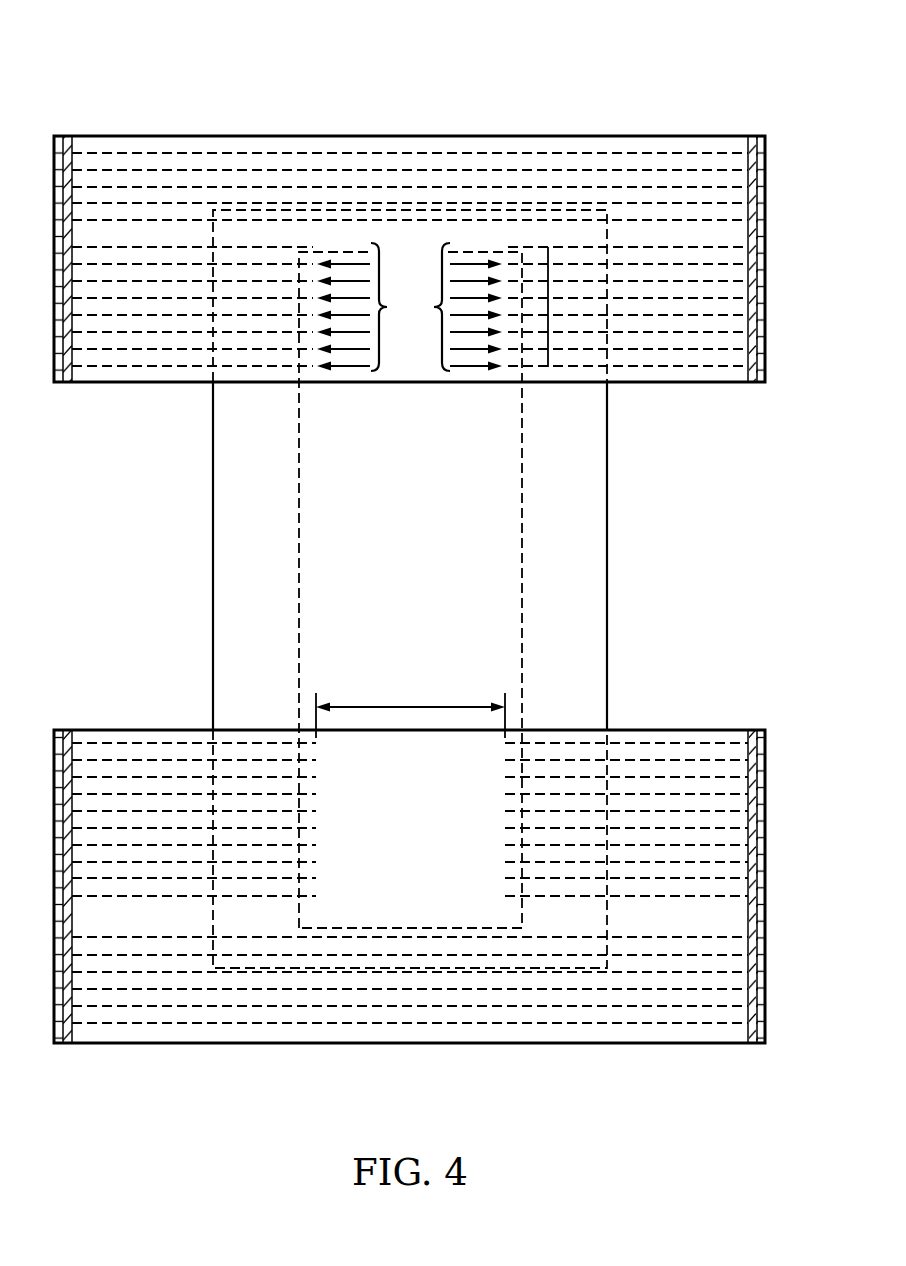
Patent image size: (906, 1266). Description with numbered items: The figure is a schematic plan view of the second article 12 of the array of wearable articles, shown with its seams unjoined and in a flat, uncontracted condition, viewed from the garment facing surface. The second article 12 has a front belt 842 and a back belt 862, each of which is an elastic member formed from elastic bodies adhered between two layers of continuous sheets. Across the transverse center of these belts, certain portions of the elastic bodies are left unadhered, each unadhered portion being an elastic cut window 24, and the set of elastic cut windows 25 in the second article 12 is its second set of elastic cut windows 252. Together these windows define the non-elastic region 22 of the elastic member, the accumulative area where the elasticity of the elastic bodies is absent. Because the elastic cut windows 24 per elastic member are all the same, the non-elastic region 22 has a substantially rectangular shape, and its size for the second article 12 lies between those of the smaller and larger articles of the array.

The second article 12 is at (214, 72).
The second front belt 842 is at (693, 383).
The second back belt 862 is at (693, 729).
The non-elastic region 22 is at (432, 829).
The elastic cut window 24 is at (408, 705).
The set of elastic cut windows 25 is at (409, 307).
The second set of elastic cut windows 252 is at (412, 373).